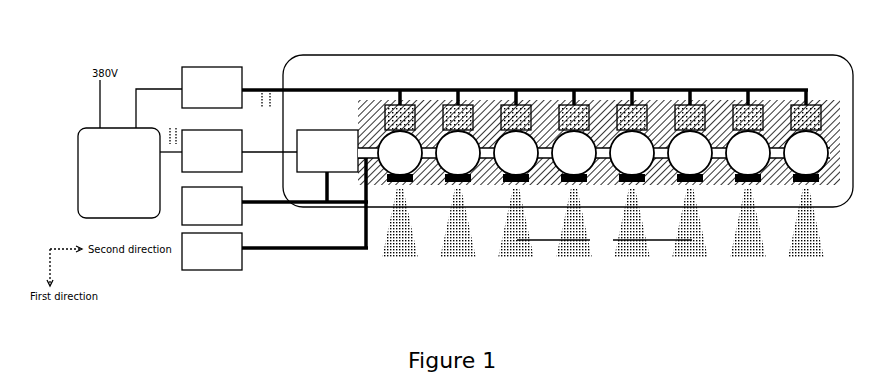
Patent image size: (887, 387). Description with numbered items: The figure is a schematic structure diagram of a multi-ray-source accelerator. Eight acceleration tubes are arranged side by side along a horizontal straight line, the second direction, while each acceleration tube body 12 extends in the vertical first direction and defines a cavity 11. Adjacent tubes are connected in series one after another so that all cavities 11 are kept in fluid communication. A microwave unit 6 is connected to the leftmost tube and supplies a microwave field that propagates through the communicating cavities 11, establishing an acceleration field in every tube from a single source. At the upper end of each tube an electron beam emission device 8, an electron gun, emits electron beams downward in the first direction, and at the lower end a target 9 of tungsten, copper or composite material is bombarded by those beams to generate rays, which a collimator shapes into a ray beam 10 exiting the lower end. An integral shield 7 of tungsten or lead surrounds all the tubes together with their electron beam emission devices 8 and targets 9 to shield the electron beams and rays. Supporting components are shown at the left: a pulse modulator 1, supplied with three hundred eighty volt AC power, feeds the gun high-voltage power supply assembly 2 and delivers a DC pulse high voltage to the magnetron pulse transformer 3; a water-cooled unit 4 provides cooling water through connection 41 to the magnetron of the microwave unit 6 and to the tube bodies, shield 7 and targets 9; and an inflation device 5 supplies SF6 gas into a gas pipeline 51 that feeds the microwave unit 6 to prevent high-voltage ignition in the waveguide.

The pulse modulator 1 is at (119, 173).
The gun high-voltage power supply assembly 2 is at (212, 87).
The magnetron pulse transformer 3 is at (212, 151).
The water-cooled unit 4 is at (212, 206).
The inflation device 5 is at (212, 251).
The microwave unit 6 is at (327, 151).
The shield 7 is at (359, 100).
The electron beam emission device 8 is at (500, 89).
The target 9 is at (577, 228).
The ray beam 10 is at (604, 241).
The cavity 11 is at (603, 132).
The acceleration tube body 12 is at (715, 128).
The first cable 41 is at (279, 205).
The gas pipeline 51 is at (298, 251).